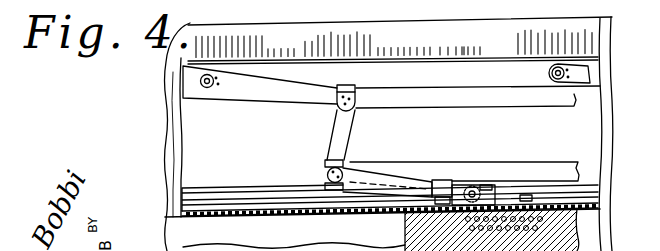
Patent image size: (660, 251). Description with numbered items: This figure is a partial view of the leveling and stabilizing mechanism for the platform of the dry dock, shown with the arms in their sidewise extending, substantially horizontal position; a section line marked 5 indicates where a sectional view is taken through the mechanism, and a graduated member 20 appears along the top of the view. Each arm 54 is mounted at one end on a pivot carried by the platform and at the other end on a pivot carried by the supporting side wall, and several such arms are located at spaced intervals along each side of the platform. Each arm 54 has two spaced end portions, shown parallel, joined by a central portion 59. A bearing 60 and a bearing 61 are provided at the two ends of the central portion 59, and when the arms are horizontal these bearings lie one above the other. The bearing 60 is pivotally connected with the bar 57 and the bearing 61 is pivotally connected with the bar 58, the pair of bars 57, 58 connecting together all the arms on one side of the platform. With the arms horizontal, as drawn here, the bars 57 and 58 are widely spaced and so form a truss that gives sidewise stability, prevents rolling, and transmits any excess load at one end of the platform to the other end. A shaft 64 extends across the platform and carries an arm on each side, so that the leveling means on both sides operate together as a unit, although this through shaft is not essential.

The graduated scale bar 20 is at (443, 70).
The shaft 64 is at (211, 77).
The arms 54 is at (258, 90).
The bearing 60 is at (336, 104).
The central portion 59 is at (346, 137).
The bearing 61 is at (327, 171).
The bar 57 is at (481, 99).
The bar 58 is at (550, 166).
The section line 5- 5 is at (123, 82).